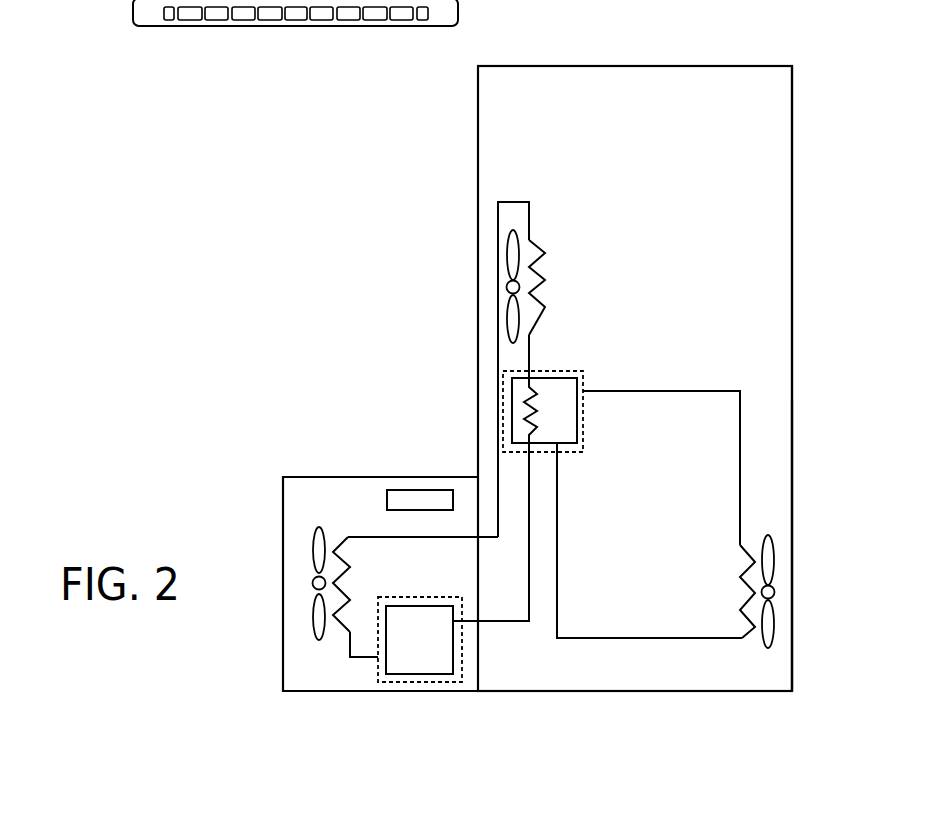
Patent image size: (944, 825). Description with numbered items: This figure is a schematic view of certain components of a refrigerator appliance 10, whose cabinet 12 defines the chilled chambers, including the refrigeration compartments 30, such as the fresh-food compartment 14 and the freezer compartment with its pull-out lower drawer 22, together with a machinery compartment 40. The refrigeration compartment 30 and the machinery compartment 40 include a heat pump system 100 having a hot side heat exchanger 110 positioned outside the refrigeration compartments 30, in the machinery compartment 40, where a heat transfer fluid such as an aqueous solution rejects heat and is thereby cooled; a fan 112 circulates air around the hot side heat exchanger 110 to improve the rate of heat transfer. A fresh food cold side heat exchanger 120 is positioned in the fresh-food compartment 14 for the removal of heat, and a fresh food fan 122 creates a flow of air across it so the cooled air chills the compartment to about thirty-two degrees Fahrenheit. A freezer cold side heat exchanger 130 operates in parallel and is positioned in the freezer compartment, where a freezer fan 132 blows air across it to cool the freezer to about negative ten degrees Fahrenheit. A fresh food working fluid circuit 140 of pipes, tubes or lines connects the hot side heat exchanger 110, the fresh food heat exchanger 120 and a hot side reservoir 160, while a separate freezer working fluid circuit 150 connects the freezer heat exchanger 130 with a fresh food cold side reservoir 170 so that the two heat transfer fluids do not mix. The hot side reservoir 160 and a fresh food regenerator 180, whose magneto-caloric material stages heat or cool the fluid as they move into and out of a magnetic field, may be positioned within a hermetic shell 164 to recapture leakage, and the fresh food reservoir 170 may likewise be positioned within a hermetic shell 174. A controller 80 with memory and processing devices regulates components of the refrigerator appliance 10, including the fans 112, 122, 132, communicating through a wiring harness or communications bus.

The refrigerator appliance 10 is at (360, 291).
The cabinet 12 is at (478, 149).
The fresh-food compartment 14 is at (812, 210).
The lower drawer 22 is at (812, 590).
The refrigeration compartment 30 is at (768, 52).
The machinery compartment 40 is at (305, 675).
The controller 80 is at (428, 500).
The heat pump system 100 is at (525, 668).
The hot side heat exchanger 110 is at (352, 578).
The fan 112 is at (315, 548).
The fresh food cold side heat exchanger 120 is at (547, 273).
The fresh food fan 122 is at (515, 254).
The freezer cold side heat exchanger 130 is at (745, 565).
The freezer fan 132 is at (768, 556).
The fresh food working fluid circuit 140 is at (503, 410).
The freezer working fluid circuit 150 is at (603, 638).
The hot side reservoir 160 is at (418, 653).
The hermetic shell 164 is at (378, 670).
The fresh food cold side reservoir 170 is at (583, 418).
The hermetic shell 174 is at (503, 384).
The fresh food regenerator 180 is at (552, 380).